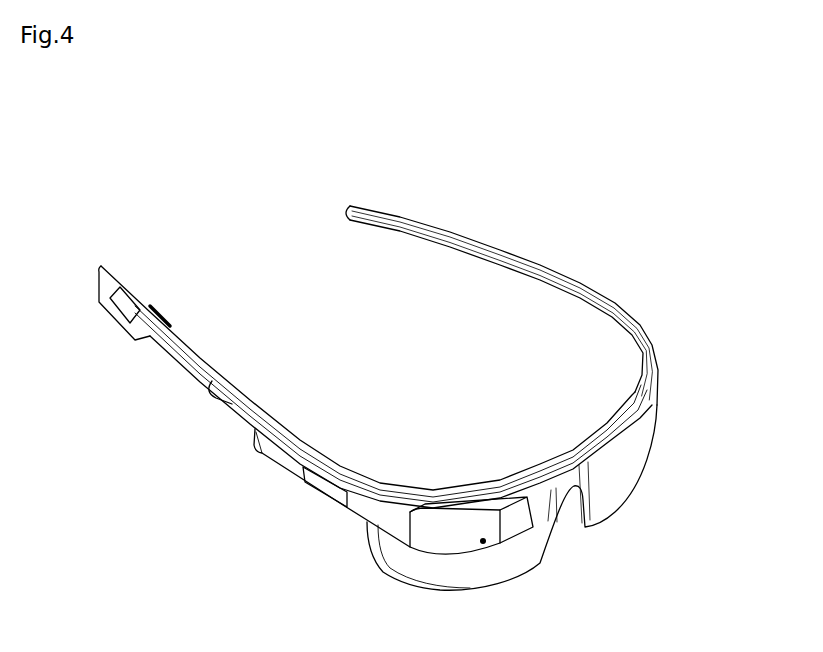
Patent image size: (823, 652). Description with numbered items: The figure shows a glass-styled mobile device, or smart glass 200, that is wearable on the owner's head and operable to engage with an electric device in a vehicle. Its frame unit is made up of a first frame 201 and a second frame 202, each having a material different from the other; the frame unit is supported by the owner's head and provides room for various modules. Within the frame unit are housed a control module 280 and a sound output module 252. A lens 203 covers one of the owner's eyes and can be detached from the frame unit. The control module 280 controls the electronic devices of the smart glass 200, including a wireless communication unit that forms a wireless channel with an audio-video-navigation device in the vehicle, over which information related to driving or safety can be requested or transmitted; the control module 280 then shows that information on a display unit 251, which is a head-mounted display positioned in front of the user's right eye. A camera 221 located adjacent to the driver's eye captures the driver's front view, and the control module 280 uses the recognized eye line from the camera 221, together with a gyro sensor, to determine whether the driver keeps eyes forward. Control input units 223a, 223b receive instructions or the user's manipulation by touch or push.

The glasses-type head mounted display device 200 is at (491, 194).
The first frame 201 is at (527, 263).
The second frame 202 is at (193, 345).
The lens 203 is at (632, 455).
The camera 221 is at (487, 543).
The control input unit 223a is at (157, 315).
The control input unit 223b is at (323, 492).
The display unit 251 is at (517, 533).
The sound output module 252 is at (112, 313).
The control module 280 is at (270, 452).